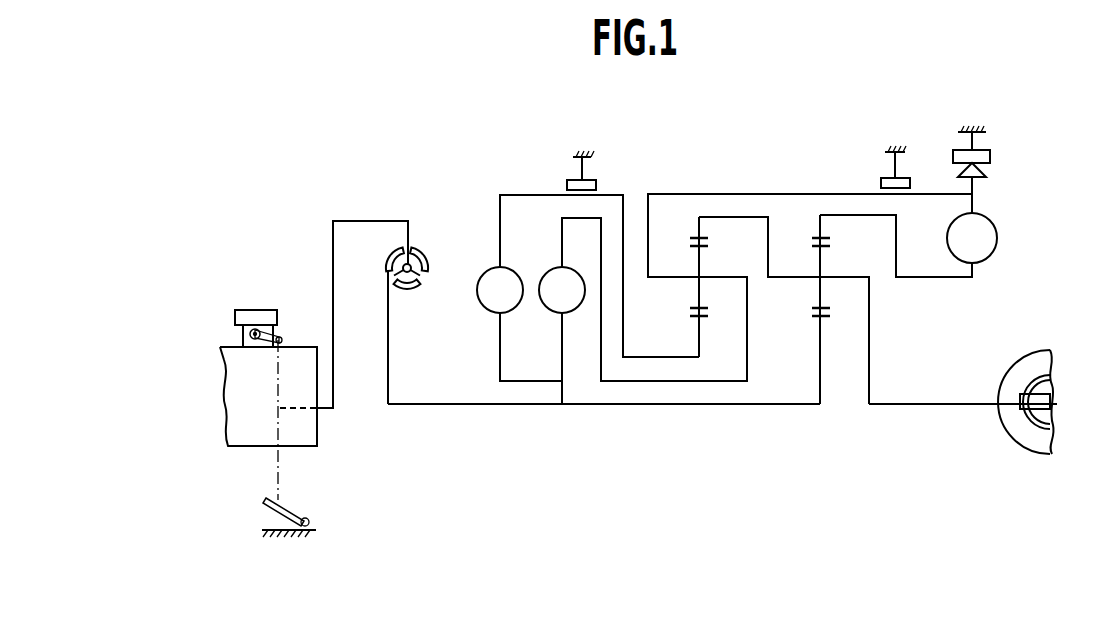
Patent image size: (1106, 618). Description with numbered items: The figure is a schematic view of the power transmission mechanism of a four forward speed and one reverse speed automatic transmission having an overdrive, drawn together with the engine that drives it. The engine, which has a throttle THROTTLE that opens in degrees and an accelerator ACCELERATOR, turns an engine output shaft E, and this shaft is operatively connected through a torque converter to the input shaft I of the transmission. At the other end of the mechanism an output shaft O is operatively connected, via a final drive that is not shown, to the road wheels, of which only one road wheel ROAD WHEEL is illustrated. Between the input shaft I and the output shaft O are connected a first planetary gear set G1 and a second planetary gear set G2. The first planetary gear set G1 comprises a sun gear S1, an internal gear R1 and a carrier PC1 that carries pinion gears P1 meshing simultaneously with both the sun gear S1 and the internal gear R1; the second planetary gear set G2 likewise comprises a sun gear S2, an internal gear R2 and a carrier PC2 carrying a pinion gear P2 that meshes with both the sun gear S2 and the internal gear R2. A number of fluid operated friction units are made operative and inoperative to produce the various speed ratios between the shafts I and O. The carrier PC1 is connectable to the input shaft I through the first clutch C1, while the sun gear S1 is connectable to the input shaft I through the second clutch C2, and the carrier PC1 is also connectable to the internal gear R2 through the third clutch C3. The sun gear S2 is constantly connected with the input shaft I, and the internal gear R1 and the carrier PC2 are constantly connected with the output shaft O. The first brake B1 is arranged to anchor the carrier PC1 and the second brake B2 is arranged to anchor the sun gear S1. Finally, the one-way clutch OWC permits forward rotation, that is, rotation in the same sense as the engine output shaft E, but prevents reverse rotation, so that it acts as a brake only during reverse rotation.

The engine output shaft E is at (327, 411).
The throttle THROTTLE is at (236, 332).
The accelerator ACCELERATOR is at (266, 499).
The input shaft I is at (437, 407).
The first clutch C1 is at (588, 288).
The second clutch C2 is at (755, 299).
The third clutch C3 is at (972, 238).
The first brake B1 is at (911, 178).
The second brake B2 is at (598, 181).
The first planetary gear set G1 is at (676, 223).
The second planetary gear set G2 is at (798, 226).
The internal gear R1 is at (708, 235).
The internal gear R2 is at (828, 235).
The carrier PC1 is at (728, 277).
The carrier PC2 is at (843, 277).
The pinion gears P1 is at (697, 291).
The pinion gear P2 is at (815, 291).
The sun gear S1 is at (701, 348).
The sun gear S2 is at (823, 352).
The one-way clutch OWC is at (992, 155).
The output shaft O is at (928, 401).
The road wheel ROAD WHEEL is at (1011, 361).